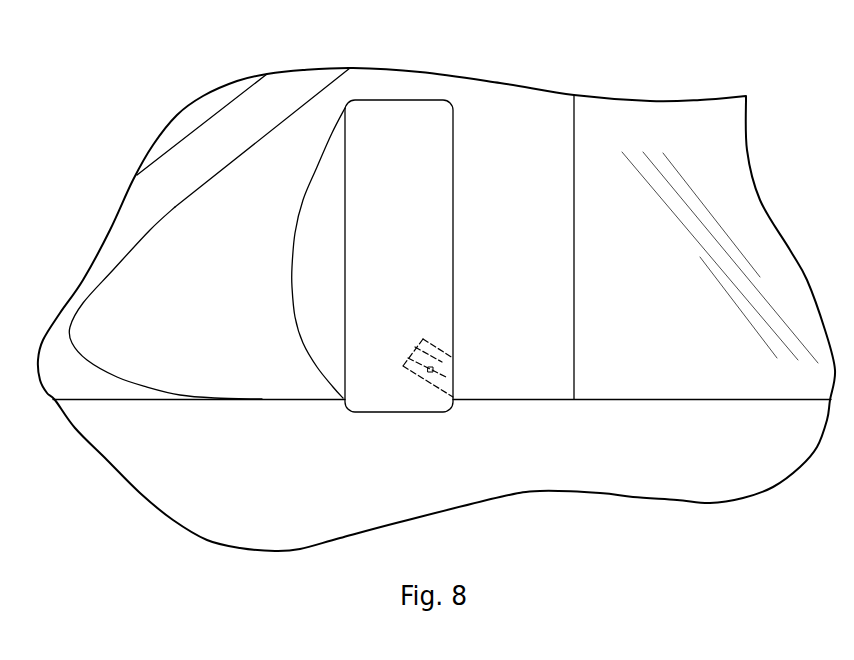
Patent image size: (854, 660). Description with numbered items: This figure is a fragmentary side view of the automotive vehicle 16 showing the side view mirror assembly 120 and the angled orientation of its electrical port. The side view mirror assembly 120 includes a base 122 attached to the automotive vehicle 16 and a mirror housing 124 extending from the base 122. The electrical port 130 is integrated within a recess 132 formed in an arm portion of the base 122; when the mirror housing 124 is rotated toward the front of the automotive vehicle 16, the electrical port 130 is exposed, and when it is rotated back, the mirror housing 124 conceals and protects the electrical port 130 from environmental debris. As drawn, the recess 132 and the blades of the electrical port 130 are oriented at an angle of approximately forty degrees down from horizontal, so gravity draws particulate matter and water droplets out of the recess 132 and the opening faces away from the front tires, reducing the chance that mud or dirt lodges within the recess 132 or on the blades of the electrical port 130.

The automotive vehicle 16 is at (678, 504).
The side view mirror assembly 120 is at (526, 248).
The base 122 is at (302, 106).
The mirror housing 124 is at (308, 268).
The electrical port 130 is at (450, 357).
The recess 132 is at (425, 338).